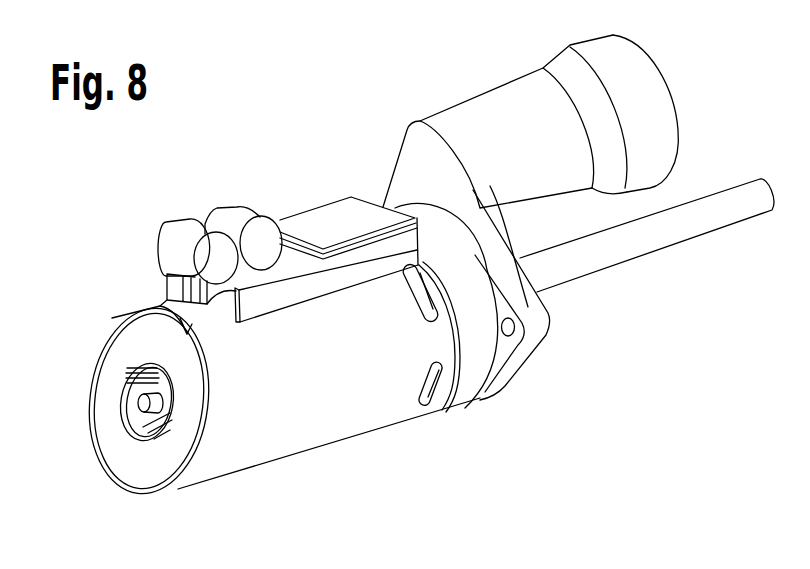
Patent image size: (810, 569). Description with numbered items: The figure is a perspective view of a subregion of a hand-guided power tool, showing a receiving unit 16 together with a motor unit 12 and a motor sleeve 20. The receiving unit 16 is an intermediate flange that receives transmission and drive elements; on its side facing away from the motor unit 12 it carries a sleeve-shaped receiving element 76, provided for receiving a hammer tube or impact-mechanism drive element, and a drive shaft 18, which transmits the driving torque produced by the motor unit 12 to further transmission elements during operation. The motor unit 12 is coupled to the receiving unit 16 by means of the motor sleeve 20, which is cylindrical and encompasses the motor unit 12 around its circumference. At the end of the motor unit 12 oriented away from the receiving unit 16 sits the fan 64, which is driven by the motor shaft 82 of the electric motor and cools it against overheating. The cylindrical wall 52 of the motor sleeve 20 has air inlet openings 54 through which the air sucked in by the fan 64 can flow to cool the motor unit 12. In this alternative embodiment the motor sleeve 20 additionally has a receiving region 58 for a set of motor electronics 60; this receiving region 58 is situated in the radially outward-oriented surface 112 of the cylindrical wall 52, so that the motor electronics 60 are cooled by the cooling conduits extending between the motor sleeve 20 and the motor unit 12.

The motor unit 12 is at (267, 447).
The receiving unit 16 is at (447, 120).
The drive shaft 18 is at (673, 227).
The motor sleeve 20 is at (372, 407).
The cylindrical wall 52 is at (227, 430).
The air inlet openings 54 is at (437, 378).
The receiving region 58 is at (296, 296).
The motor electronics 60 is at (318, 222).
The fan 64 is at (137, 432).
The sleeve-shaped receiving element 76 is at (643, 66).
The motor shaft 82 is at (140, 408).
The radially outward-oriented surface 112 is at (150, 302).